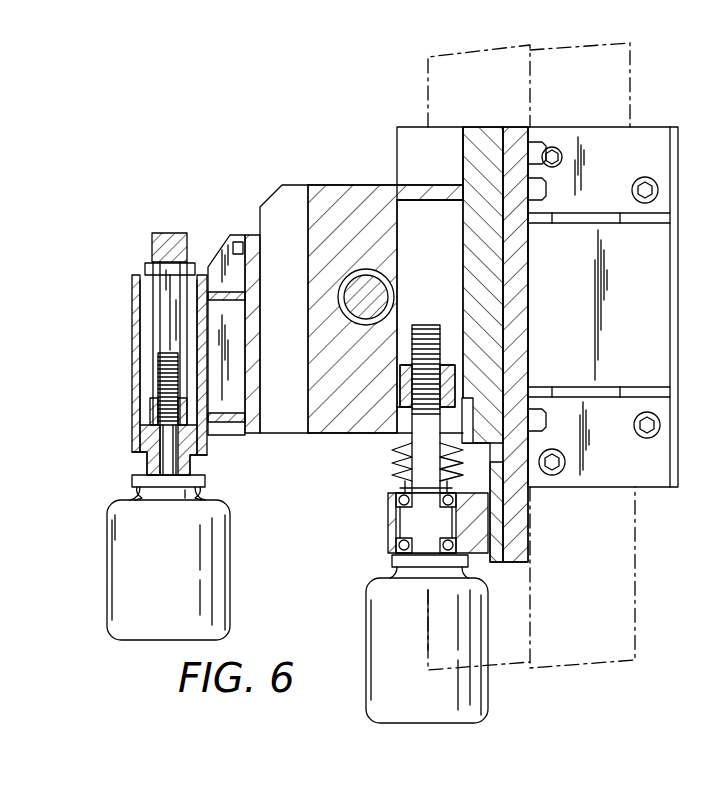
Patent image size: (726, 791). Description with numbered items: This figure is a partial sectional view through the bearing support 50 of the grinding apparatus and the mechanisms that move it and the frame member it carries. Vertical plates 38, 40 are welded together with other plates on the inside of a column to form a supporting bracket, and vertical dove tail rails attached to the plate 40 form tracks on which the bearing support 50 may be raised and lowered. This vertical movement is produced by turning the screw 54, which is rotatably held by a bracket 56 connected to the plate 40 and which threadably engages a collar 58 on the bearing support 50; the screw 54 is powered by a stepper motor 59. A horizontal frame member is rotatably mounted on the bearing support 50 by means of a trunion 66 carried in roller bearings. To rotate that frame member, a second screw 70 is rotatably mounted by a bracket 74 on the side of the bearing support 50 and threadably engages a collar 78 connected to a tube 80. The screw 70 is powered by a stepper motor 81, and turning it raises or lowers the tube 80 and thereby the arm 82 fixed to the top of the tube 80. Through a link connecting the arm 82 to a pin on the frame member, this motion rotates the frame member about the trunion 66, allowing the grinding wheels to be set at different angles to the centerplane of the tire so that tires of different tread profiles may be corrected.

The vertical plate 38 is at (656, 127).
The vertical plate 40 is at (530, 306).
The bearing support 50 is at (335, 185).
The screw 54 is at (392, 470).
The bracket 56 is at (395, 527).
The collar 58 is at (402, 390).
The stepper motor 59 is at (368, 602).
The trunion 66 is at (364, 270).
The screw 70 is at (160, 372).
The bracket 74 is at (222, 435).
The collar 78 is at (152, 405).
The tube 80 is at (135, 346).
The stepper motor 81 is at (107, 546).
The arm 82 is at (152, 246).